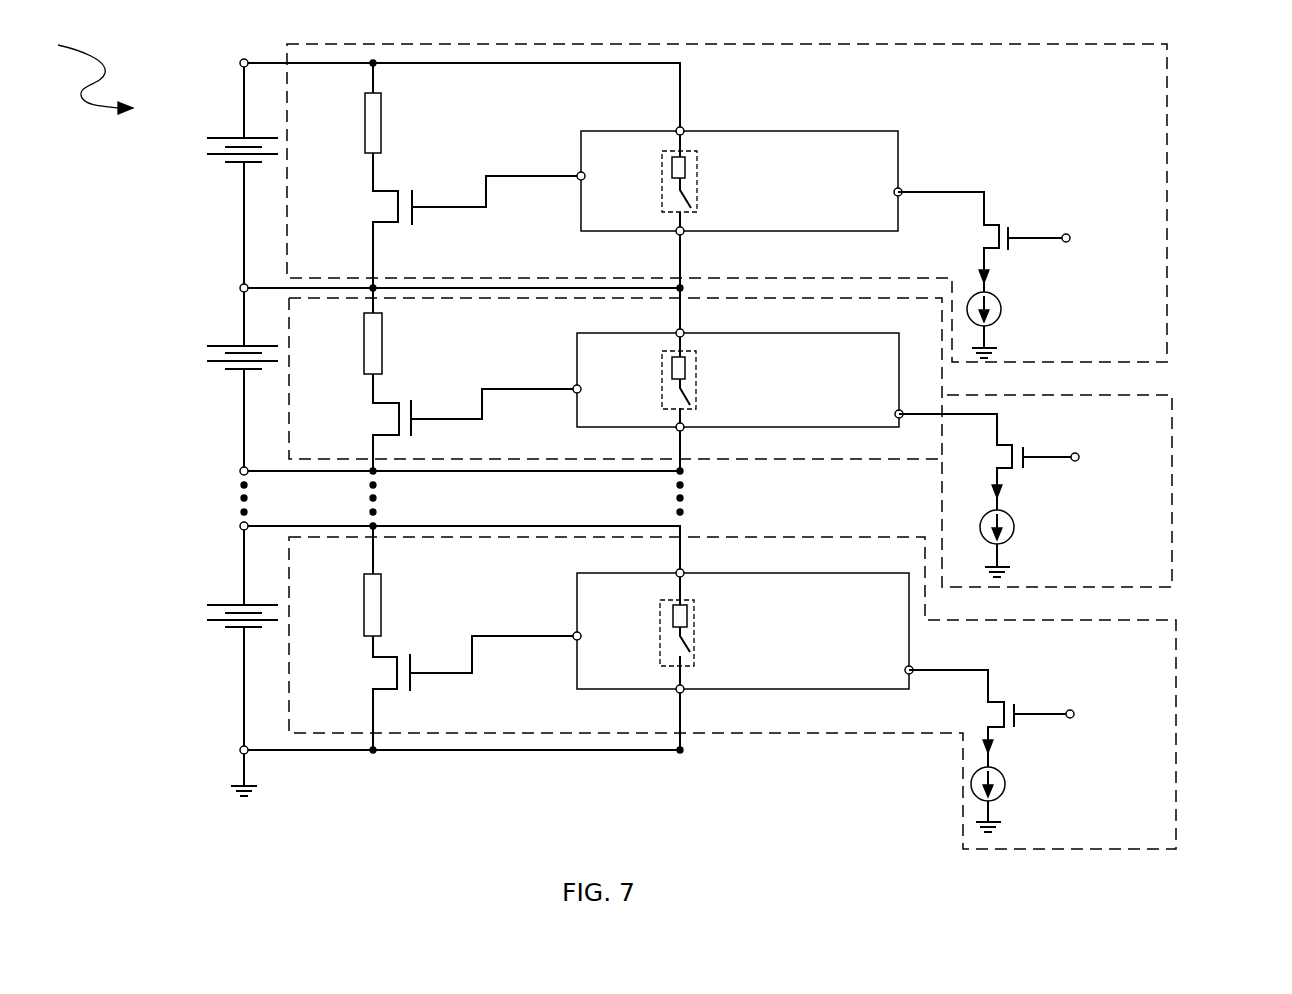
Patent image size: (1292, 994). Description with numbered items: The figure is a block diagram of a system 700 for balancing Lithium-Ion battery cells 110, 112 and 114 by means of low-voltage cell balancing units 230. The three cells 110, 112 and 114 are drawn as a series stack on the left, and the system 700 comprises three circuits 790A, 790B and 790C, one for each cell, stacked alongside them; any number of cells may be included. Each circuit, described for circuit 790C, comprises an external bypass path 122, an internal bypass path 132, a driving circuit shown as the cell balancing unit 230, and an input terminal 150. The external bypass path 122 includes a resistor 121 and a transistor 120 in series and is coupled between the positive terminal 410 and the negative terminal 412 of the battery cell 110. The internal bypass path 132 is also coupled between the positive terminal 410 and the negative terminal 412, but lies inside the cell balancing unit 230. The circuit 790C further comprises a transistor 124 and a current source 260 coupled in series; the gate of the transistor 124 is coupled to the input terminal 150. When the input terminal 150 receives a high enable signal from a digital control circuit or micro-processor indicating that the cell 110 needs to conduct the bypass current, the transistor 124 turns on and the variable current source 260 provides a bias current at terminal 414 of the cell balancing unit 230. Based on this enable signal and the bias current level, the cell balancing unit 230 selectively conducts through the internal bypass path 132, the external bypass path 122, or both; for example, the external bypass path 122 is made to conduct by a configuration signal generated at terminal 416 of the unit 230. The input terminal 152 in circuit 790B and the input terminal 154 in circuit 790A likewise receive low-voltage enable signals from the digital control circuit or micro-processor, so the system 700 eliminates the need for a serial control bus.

The system 700 is at (119, 86).
The battery cell 110 is at (233, 604).
The battery cell 112 is at (234, 345).
The battery cell 114 is at (240, 164).
The external bypass path 122 is at (372, 77).
The resistor 121 is at (383, 146).
The transistor 120 is at (413, 212).
The terminal 416 is at (581, 173).
The internal bypass path 132 is at (662, 181).
The cell balancing unit 230 is at (743, 410).
The positive terminal 410 is at (681, 128).
The negative terminal 412 is at (681, 234).
The terminal 414 is at (898, 189).
The transistor 124 is at (990, 224).
The input terminal 154 is at (1066, 234).
The input terminal 152 is at (1076, 453).
The input terminal 150 is at (1071, 710).
The current source 260 is at (1001, 302).
The circuit 790A is at (1167, 135).
The circuit 790B is at (1172, 416).
The circuit 790C is at (1176, 645).